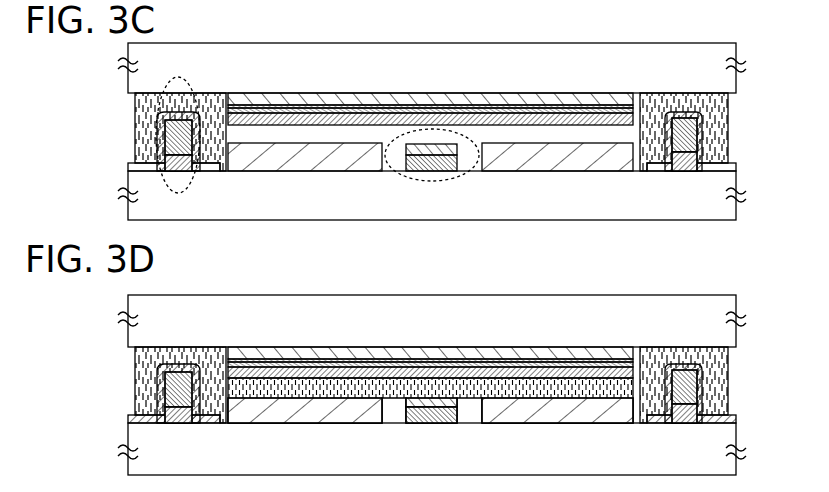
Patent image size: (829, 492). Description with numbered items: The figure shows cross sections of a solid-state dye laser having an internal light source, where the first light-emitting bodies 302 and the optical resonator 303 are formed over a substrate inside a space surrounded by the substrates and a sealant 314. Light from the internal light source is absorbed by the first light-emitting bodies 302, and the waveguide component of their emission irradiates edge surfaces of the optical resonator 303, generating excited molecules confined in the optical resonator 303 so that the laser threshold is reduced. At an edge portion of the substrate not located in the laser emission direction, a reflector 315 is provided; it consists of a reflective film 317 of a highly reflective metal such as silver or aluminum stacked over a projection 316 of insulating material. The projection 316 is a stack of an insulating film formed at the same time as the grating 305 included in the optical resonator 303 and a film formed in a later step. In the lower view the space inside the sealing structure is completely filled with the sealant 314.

In FIG. 3C, the first light-emitting bodies 302 is at (430, 52).
In FIG. 3C, the optical resonator 303 is at (403, 250).
In FIG. 3C, the grating 305 is at (434, 160).
In FIG. 3C, the sealant 314 is at (145, 110).
In FIG. 3D, the sealant 314 is at (718, 370).
In FIG. 3C, the reflector 315 is at (181, 78).
In FIG. 3C, the projection 316 is at (692, 158).
In FIG. 3C, the reflective film 317 is at (703, 122).